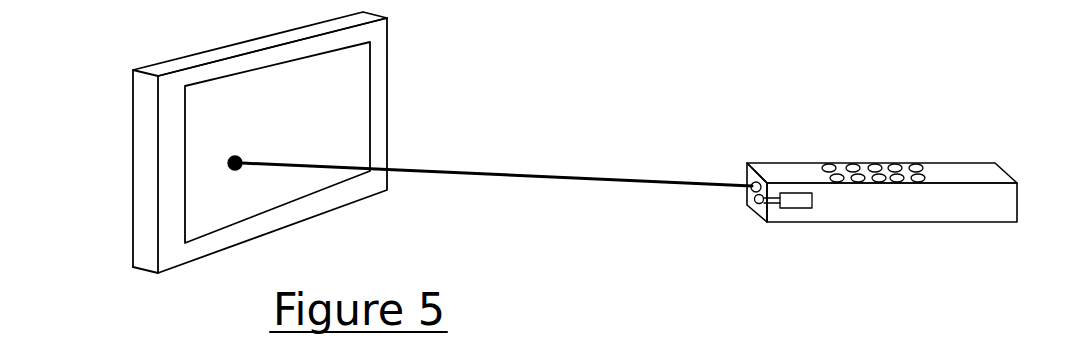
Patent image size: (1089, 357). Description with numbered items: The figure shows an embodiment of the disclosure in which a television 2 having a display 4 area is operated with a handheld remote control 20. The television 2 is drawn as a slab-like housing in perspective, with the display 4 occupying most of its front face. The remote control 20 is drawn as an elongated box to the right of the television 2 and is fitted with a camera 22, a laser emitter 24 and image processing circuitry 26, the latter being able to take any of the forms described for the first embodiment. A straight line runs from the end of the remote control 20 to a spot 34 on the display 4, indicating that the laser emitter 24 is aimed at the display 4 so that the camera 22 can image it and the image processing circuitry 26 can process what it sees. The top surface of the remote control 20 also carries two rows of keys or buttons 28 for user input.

The television 2 is at (387, 58).
The display 4 is at (318, 85).
The remote control 20 is at (850, 186).
The camera 22 is at (754, 205).
The laser emitter 24 is at (750, 183).
The image processing circuitry 26 is at (798, 209).
The keys or buttons 28 is at (881, 181).
The pointing spot 34 is at (230, 161).